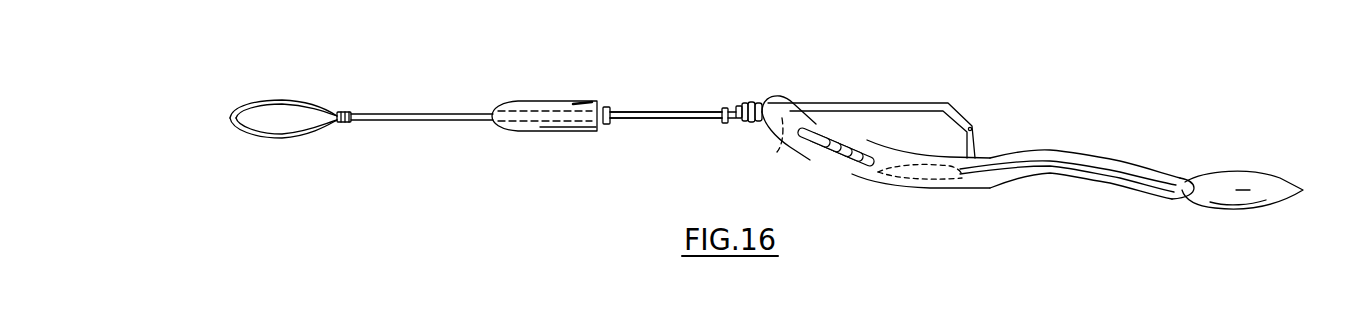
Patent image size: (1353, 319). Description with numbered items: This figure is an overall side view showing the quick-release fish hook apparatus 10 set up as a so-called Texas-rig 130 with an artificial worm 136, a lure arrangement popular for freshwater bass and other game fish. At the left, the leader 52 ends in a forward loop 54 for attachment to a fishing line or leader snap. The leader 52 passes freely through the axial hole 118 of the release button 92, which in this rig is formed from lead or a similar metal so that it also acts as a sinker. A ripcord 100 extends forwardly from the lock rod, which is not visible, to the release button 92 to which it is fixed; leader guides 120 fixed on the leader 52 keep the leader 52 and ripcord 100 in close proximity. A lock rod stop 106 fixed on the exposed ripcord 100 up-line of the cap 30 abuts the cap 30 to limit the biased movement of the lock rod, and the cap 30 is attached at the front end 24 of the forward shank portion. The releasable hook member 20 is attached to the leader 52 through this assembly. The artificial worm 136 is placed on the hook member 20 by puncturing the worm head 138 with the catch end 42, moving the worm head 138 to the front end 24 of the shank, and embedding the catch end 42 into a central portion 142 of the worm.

The quick-release fish hook apparatus 10 is at (1010, 85).
The hook member 20 is at (910, 106).
The front end 24 is at (777, 152).
The cap 30 is at (751, 100).
The catch end 42 is at (898, 186).
The leader 52 is at (414, 112).
The loop end 54 is at (274, 99).
The release button 92 is at (516, 103).
The ripcord 100 is at (675, 111).
The lock rod stop 106 is at (739, 105).
The axial hole 118 is at (536, 130).
The leader guides 120 is at (606, 107).
The Texas-rig 130 is at (400, 42).
The artificial worm 136 is at (1056, 182).
The worm head 138 is at (779, 96).
The central portion 142 is at (968, 188).